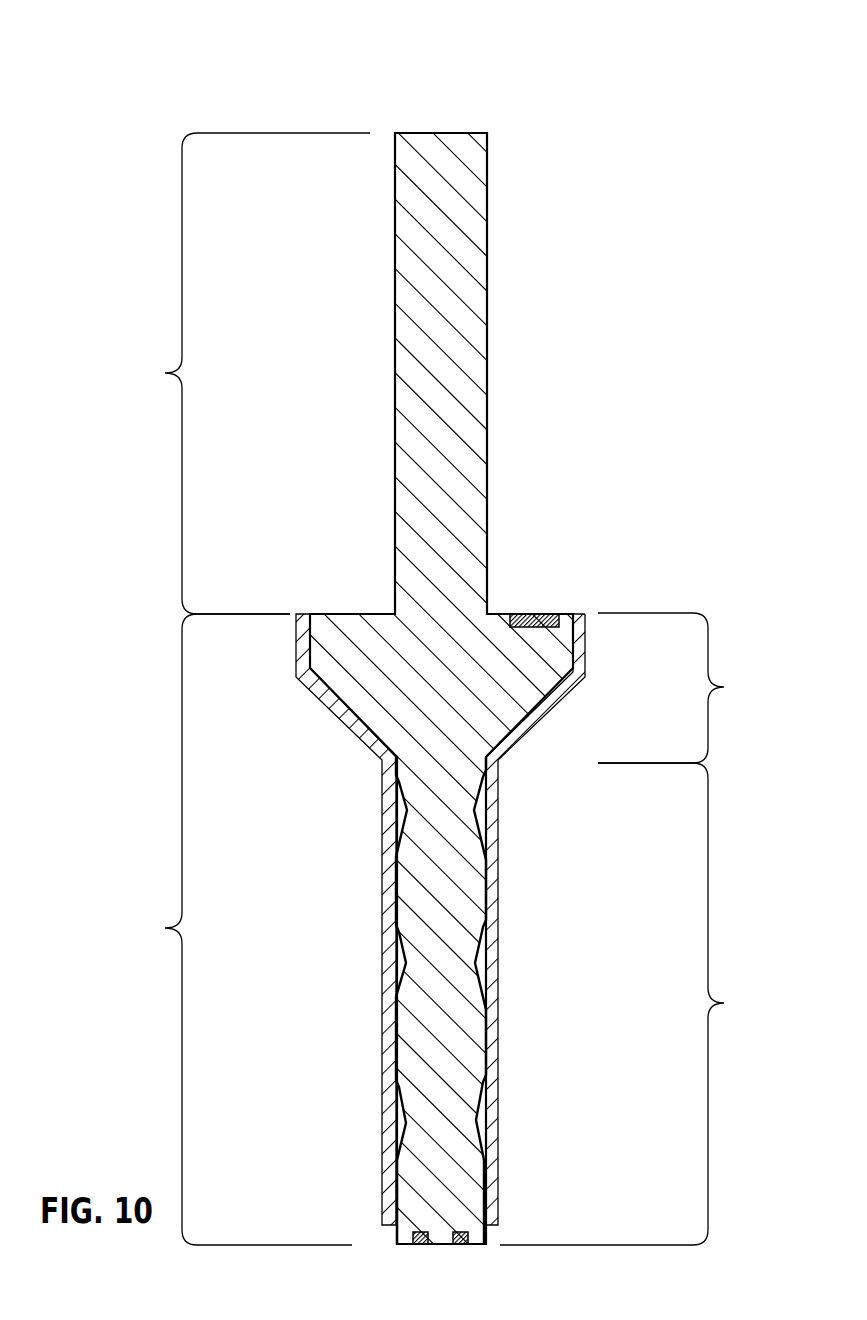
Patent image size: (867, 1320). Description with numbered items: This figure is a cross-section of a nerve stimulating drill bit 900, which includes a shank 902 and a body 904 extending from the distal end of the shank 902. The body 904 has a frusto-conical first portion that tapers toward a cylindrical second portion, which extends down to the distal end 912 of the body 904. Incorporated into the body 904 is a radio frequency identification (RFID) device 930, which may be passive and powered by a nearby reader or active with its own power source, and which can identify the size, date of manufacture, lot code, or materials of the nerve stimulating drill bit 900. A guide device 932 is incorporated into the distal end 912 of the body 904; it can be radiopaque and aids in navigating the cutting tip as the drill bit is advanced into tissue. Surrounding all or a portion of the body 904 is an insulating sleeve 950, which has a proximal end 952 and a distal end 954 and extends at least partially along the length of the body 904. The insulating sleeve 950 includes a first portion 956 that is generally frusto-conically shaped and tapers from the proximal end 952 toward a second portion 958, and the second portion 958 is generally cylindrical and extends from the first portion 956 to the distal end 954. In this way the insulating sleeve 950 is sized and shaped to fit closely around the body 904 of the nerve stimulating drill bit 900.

The nerve stimulating drill bit 900 is at (484, 660).
The shank 902 is at (229, 373).
The body 904 is at (220, 929).
The distal end of the body 912 is at (429, 660).
The radio frequency identification (RFID) device 930 is at (540, 613).
The guide device 932 is at (473, 1244).
The insulating sleeve 950 is at (488, 945).
The proximal end of the insulating sleeve 952 is at (352, 723).
The distal end of the insulating sleeve 954 is at (495, 1183).
The first portion of the insulating sleeve 956 is at (701, 688).
The second portion of the insulating sleeve 958 is at (652, 1004).